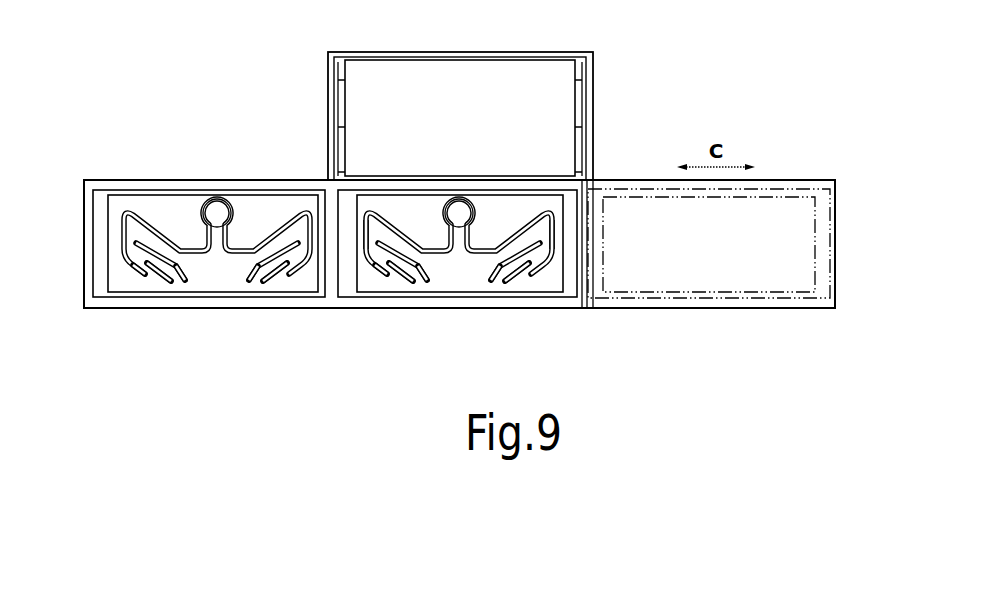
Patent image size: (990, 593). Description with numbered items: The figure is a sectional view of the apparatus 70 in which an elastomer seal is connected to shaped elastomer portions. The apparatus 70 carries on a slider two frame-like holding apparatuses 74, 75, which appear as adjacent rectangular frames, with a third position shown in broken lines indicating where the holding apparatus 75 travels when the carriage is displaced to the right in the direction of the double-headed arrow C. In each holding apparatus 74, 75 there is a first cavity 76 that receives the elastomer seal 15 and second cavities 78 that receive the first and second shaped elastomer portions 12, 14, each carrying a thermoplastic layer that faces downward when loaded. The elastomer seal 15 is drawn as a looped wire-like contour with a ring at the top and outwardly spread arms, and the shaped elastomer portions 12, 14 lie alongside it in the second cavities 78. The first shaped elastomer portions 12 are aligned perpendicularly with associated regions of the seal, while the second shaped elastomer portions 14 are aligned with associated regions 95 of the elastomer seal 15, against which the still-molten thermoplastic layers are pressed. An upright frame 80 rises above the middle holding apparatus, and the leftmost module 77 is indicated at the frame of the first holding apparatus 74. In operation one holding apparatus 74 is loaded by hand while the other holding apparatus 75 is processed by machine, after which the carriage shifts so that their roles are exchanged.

The first shaped elastomer portion 12 is at (245, 259).
The second shaped elastomer portion 14 is at (170, 282).
The elastomer seal 15 is at (240, 202).
The apparatus 70 is at (667, 68).
The holding apparatus 74 is at (160, 215).
The holding apparatus 75 is at (386, 196).
The first cavity 76 is at (141, 278).
The module 77 is at (130, 164).
The second cavity 78 is at (249, 281).
The upright panel 80 is at (512, 88).
The region of the elastomer seal 95 is at (375, 268).